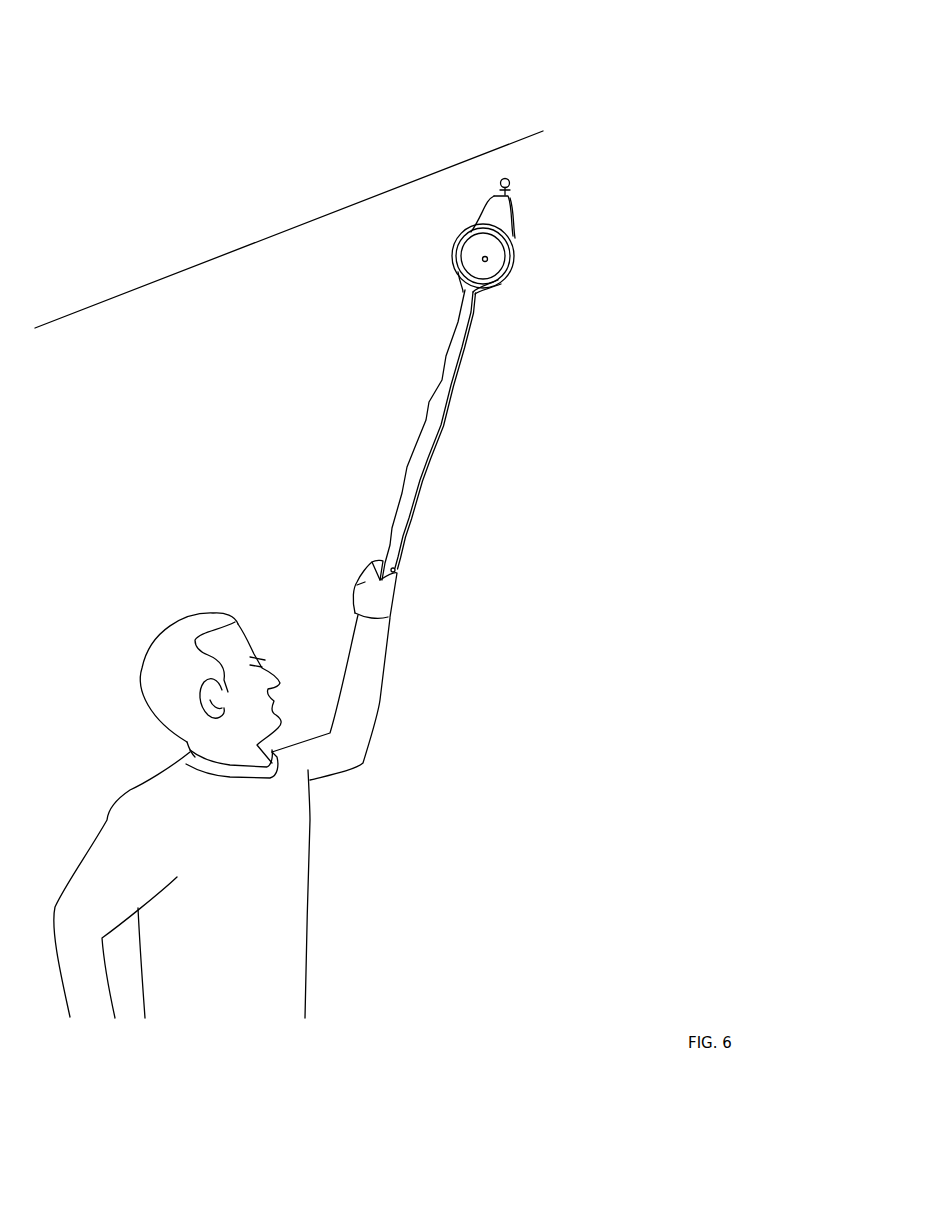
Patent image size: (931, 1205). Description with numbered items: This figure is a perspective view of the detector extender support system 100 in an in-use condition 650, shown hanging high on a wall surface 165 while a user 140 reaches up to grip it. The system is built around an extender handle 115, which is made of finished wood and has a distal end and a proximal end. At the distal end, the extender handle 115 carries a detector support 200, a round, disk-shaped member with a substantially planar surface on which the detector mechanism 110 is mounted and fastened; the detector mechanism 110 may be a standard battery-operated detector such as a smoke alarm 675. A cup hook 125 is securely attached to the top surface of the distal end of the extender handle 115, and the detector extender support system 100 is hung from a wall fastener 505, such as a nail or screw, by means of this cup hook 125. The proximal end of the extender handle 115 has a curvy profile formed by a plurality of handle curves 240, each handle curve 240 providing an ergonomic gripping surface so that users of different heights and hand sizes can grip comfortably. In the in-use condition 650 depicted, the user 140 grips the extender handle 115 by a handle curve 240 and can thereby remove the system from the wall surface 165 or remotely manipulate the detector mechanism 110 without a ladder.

The detector extender support system 100 is at (548, 72).
The in-use condition 650 is at (580, 106).
The wall surface 165 is at (609, 314).
The cup hook 125 is at (495, 182).
The wall fastener 505 is at (515, 181).
The detector support 200 is at (450, 253).
The detector mechanism 110 is at (474, 279).
The smoke alarm 675 is at (494, 263).
The handle curve 240 is at (400, 495).
The extender handle 115 is at (402, 533).
The user 140 is at (246, 858).